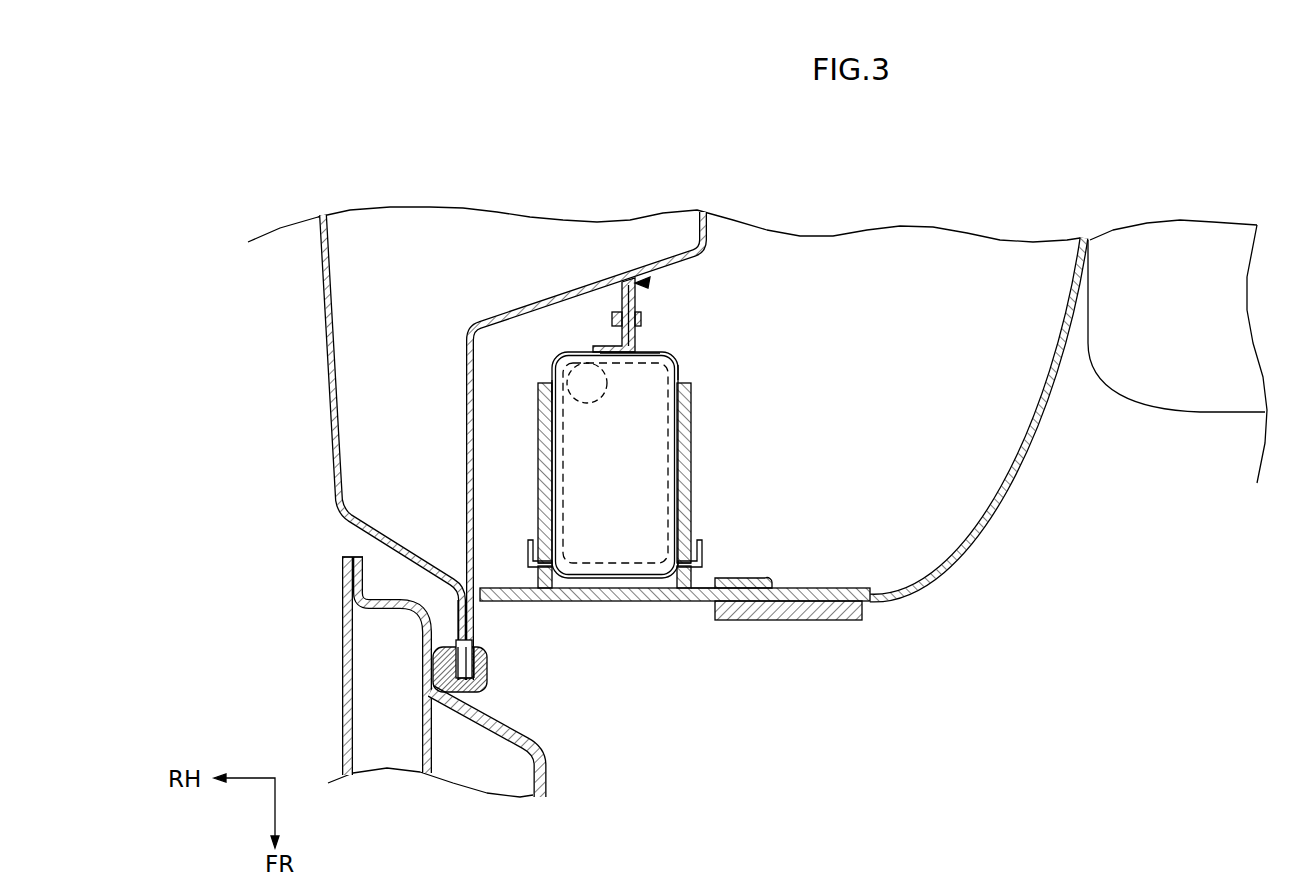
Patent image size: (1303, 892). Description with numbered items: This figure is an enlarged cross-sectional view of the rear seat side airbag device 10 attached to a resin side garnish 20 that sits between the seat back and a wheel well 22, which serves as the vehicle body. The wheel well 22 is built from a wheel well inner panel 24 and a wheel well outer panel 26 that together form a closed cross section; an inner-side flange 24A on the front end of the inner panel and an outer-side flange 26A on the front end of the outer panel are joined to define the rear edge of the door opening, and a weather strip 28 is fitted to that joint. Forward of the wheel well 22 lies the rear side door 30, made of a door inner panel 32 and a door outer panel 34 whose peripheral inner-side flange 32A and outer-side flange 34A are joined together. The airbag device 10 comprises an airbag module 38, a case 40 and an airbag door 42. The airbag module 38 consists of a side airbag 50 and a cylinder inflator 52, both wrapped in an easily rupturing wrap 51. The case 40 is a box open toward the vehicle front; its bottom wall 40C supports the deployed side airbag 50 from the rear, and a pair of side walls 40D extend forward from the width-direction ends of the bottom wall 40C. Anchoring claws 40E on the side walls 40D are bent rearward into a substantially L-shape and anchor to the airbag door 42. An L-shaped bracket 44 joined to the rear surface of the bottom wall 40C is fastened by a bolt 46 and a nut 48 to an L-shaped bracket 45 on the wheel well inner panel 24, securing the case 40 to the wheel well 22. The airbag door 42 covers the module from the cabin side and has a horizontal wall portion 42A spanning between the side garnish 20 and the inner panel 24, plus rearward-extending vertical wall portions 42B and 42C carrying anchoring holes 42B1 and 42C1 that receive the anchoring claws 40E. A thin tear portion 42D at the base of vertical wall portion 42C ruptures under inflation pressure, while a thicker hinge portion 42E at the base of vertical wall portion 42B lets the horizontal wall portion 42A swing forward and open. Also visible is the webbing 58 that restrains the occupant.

The rear seat side airbag device 10 is at (774, 342).
The side garnish 20 is at (1014, 482).
The wheel well 22 is at (230, 320).
The wheel well inner panel 24 is at (460, 385).
The inner-side flange 24A is at (487, 675).
The wheel well outer panel 26 is at (337, 430).
The outer-side flange 26A is at (457, 625).
The weather strip 28 is at (484, 690).
The rear side door 30 is at (270, 615).
The door inner panel 32 is at (412, 695).
The inner-side flange 32A is at (357, 556).
The door outer panel 34 is at (332, 746).
The outer-side flange 34A is at (343, 557).
The airbag module 38 is at (656, 584).
The case 40 is at (642, 413).
The bottom wall 40C is at (640, 348).
The side walls 40D is at (551, 373).
The anchoring claws 40E is at (528, 553).
The airbag door garnish 42 is at (624, 551).
The horizontal wall portion 42A is at (590, 603).
The vertical wall portion 42B is at (540, 477).
The anchoring hole 42B1 is at (530, 568).
The vertical wall portion 42C is at (693, 440).
The anchoring hole 42C1 is at (690, 572).
The tear portion 42D is at (690, 603).
The hinge portion 42E is at (547, 602).
The L-shaped bracket 44 is at (596, 347).
The L-shaped bracket 45 is at (650, 283).
The bolt 46 is at (641, 318).
The nut 48 is at (622, 302).
The side airbag 50 is at (672, 458).
The wrap 51 is at (636, 588).
The inflator 52 is at (578, 362).
The webbing 58 is at (810, 622).